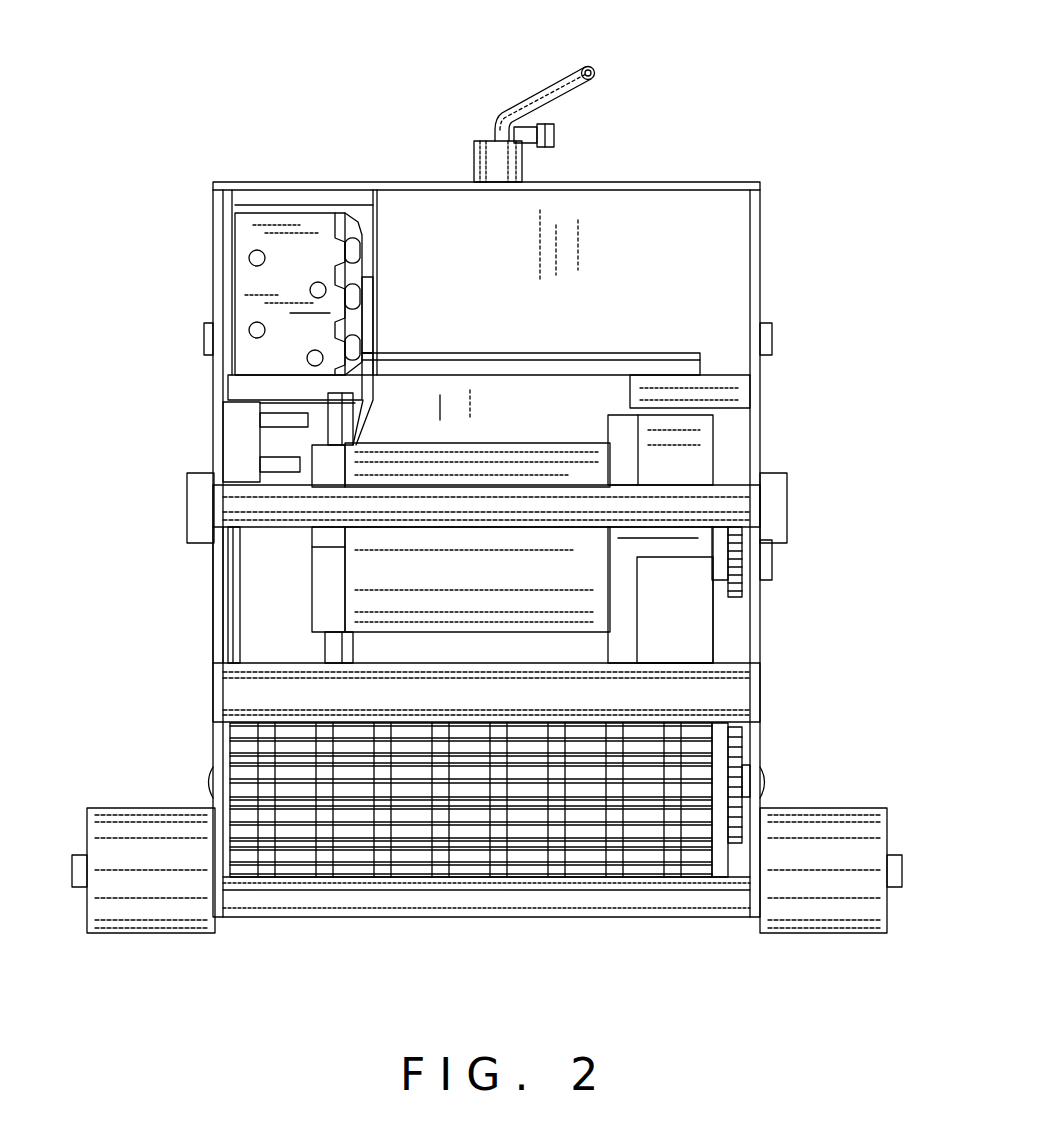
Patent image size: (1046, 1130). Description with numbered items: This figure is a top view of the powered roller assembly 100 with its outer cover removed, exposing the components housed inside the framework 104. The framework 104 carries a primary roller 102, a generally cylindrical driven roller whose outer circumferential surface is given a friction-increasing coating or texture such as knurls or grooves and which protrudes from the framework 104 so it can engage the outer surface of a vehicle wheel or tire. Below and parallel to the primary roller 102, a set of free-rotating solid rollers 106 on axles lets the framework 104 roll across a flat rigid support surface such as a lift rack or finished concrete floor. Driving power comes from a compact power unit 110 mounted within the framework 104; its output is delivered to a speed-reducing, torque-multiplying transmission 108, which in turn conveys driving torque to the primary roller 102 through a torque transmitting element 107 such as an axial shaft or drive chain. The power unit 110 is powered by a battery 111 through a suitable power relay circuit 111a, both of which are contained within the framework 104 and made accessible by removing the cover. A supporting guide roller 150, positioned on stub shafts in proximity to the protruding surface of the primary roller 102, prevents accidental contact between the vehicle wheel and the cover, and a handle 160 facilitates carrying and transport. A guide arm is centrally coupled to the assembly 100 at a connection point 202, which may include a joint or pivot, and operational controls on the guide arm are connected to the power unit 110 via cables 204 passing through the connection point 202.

The powered roller assembly 100 is at (783, 160).
The primary roller 102 is at (474, 865).
The framework 104 is at (213, 638).
The free-rotating solid rollers 106 is at (173, 808).
The torque transmitting element 107 is at (730, 727).
The transmission 108 is at (680, 462).
The power unit 110 is at (497, 443).
The battery 111 is at (560, 233).
The power relay circuit 111a is at (281, 265).
The supporting guide roller 150 is at (307, 695).
The handle 160 is at (245, 508).
The connection point 202 is at (472, 143).
The cables 204 is at (530, 88).